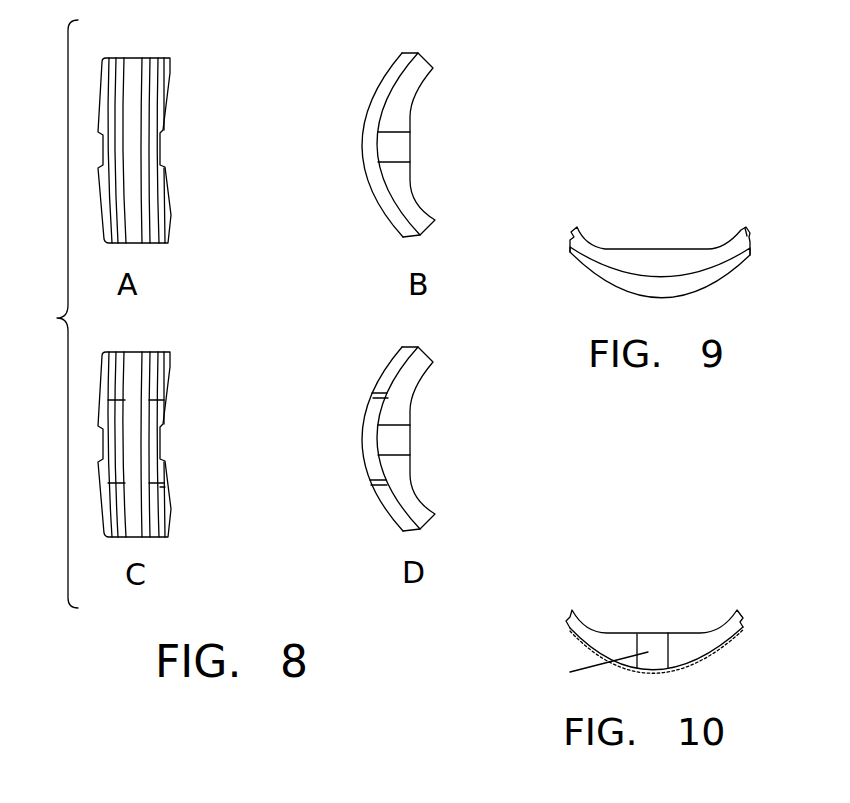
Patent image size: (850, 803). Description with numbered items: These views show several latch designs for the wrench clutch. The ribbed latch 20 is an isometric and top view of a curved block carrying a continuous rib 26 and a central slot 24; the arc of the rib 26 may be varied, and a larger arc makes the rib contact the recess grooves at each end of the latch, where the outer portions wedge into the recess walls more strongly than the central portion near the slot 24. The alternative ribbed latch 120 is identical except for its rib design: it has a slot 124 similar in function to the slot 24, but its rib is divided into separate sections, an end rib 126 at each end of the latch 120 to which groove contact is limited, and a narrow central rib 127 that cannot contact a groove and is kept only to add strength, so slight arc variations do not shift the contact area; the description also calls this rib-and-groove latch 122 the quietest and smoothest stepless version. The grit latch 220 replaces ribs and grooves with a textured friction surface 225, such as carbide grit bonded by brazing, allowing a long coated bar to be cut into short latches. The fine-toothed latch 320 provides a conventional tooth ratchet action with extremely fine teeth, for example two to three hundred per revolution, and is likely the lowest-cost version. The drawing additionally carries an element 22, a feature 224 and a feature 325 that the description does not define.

In FIG. 8A, the latch 20 is at (192, 63).
In FIG. 8B, the latch 20 is at (367, 65).
In FIG. 8B, the inner face of plate 22 is at (410, 117).
In FIG. 8A, the slot 24 is at (163, 148).
In FIG. 8B, the slot 24 is at (377, 143).
In FIG. 8A, the rib 26 is at (147, 198).
In FIG. 8B, the rib 26 is at (370, 182).
In FIG. 8C, the latch 120 is at (186, 436).
In FIG. 8D, the latch 120 is at (357, 433).
In FIG. 8D, the latch 122 is at (477, 438).
In FIG. 8C, the slot 124 is at (188, 444).
In FIG. 8D, the slot 124 is at (347, 428).
In FIG. 8C, the rib 126 is at (184, 444).
In FIG. 8D, the rib 126 is at (343, 439).
In FIG. 8C, the rib 127 is at (184, 443).
In FIG. 8D, the rib 127 is at (335, 439).
In FIG. 9, the latch 220 is at (680, 233).
In FIG. 9, the end notch 224 is at (747, 233).
In FIG. 9, the textured friction surface 225 is at (600, 277).
In FIG. 10, the latch 320 is at (669, 618).
In FIG. 10, the serrated surface 325 is at (722, 655).